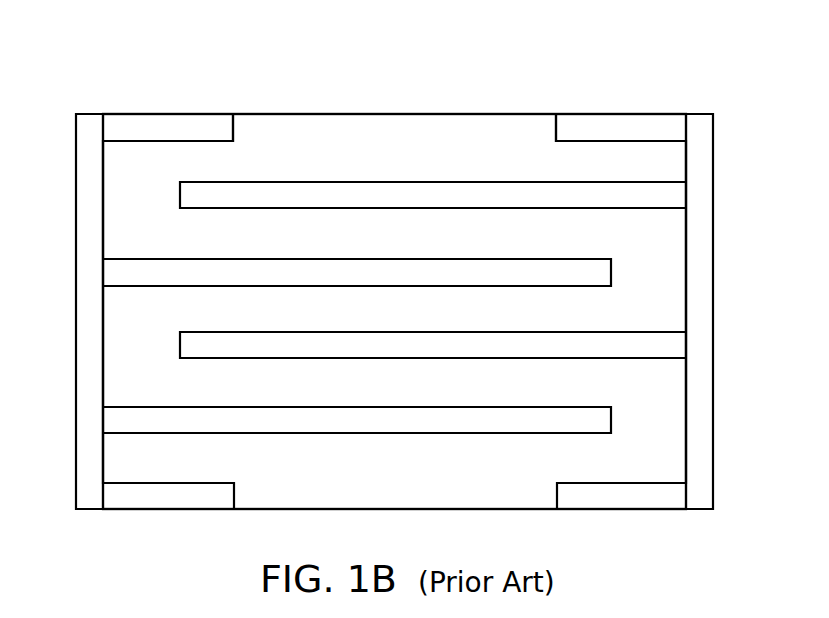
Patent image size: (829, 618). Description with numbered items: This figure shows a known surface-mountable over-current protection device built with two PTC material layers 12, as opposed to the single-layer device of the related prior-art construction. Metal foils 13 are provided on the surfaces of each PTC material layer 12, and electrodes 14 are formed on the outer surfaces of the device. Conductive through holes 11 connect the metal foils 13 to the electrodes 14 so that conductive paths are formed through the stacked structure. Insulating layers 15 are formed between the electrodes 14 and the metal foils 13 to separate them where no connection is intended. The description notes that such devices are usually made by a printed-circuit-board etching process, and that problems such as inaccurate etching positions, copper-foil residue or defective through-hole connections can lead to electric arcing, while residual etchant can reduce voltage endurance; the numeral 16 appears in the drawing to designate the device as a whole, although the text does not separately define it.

The conductive through hole 11 is at (713, 173).
The PTC material layer 12 is at (676, 230).
The metal foil 13 is at (190, 197).
The electrode 14 is at (168, 114).
The insulating layer 15 is at (394, 160).
The multilayer ceramic capacitor 16 is at (712, 58).